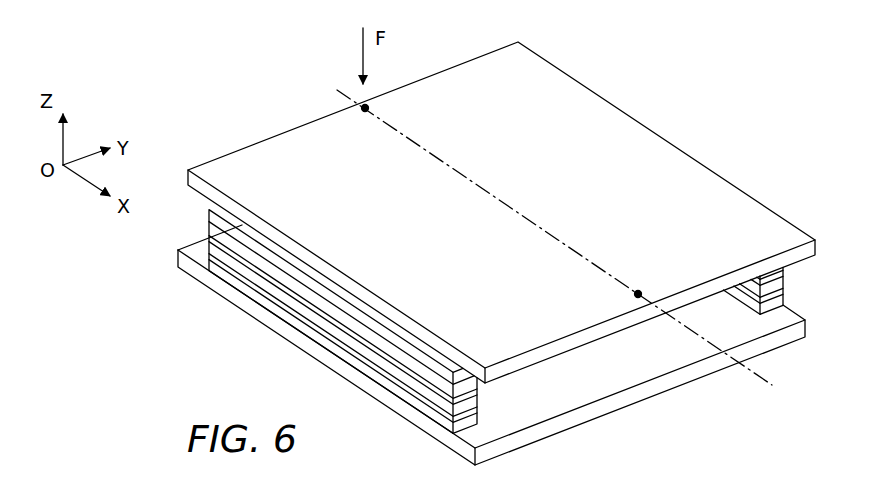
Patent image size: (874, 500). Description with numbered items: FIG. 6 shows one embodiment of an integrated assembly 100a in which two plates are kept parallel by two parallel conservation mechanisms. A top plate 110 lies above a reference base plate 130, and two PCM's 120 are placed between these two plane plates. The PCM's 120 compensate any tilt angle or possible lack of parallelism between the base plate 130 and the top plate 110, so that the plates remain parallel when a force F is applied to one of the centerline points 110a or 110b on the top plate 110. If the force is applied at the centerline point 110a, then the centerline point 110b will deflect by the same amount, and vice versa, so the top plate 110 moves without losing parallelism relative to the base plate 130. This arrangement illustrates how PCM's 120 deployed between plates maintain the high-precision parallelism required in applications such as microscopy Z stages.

The integrated assembly example 100a is at (735, 91).
The top plate 110 is at (540, 176).
The centerline point 110a is at (362, 109).
The centerline point 110b is at (639, 292).
The parallel conservation mechanism 120 is at (469, 405).
The reference base plate 130 is at (659, 387).